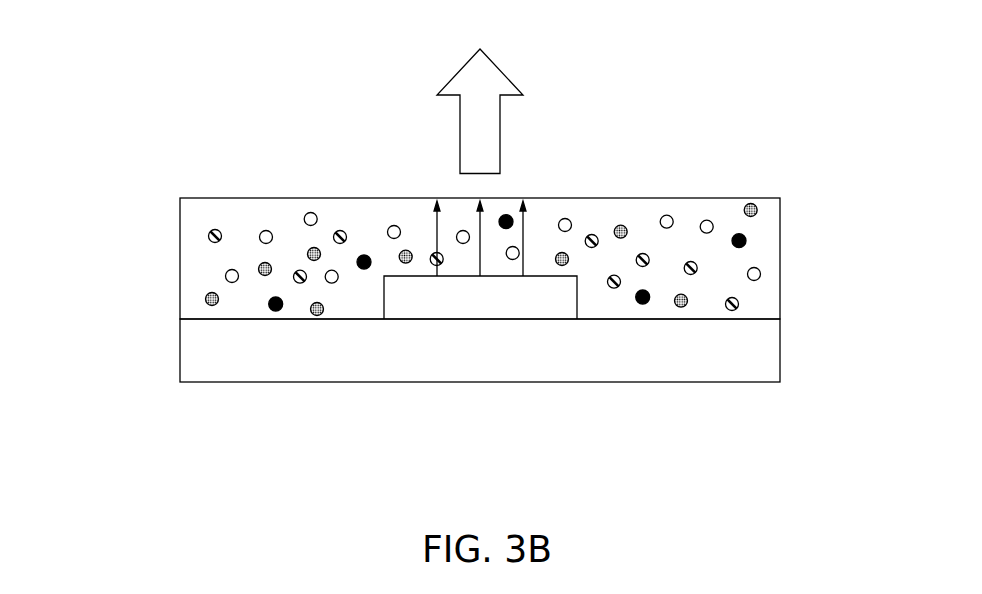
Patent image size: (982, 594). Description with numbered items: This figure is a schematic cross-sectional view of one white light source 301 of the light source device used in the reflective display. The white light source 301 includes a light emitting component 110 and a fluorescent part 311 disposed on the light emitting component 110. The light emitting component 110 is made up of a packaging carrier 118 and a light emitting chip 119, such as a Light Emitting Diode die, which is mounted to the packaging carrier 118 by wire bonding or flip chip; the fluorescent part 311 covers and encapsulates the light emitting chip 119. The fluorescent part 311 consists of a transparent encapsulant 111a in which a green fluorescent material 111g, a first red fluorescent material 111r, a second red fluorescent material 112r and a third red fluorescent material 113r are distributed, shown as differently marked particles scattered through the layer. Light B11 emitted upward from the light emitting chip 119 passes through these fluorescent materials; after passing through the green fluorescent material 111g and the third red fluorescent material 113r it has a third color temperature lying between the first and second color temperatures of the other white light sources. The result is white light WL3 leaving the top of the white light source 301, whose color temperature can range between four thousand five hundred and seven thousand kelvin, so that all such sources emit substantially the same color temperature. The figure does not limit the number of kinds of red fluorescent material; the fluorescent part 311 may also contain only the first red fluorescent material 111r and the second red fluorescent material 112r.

The white light source 301 is at (110, 120).
The fluorescent part 311 is at (152, 263).
The light emitting component 110 is at (527, 440).
The packaging carrier 118 is at (503, 368).
The light emitting chip 119 is at (405, 305).
The green fluorescent material 111g is at (310, 212).
The first red fluorescent material 111r is at (205, 302).
The second red fluorescent material 112r is at (293, 277).
The third red fluorescent material 113r is at (271, 309).
The transparent encapsulant 111a is at (768, 215).
The light B11 is at (436, 223).
The white light WL3 is at (492, 117).